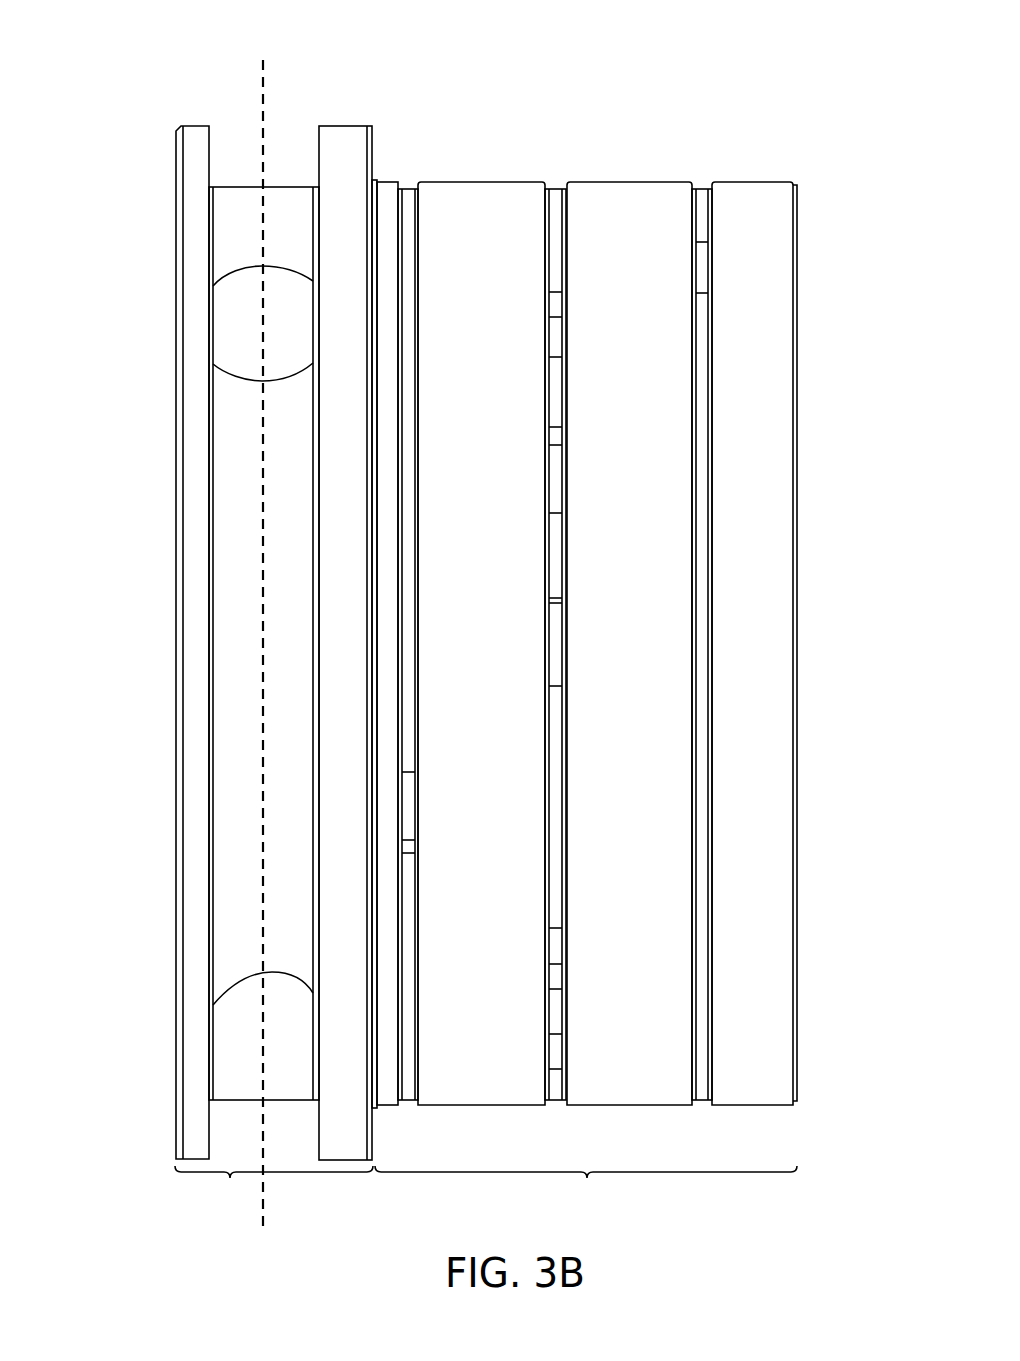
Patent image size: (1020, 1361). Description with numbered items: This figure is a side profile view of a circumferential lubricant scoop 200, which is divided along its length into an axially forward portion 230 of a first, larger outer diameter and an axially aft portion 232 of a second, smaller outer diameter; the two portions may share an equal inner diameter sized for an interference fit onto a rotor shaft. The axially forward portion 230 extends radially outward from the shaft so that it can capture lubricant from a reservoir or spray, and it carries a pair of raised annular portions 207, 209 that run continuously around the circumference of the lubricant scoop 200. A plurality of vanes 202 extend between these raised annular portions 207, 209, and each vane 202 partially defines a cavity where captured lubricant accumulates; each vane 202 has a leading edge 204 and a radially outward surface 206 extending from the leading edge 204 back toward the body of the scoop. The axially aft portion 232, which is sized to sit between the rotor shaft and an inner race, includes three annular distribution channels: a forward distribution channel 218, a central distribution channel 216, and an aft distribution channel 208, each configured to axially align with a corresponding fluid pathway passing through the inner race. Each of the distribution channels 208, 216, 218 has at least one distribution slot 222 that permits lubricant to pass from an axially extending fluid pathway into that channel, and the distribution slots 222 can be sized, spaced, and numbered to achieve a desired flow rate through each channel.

The circumferential lubricant scoop 200 is at (121, 79).
The vane 202 is at (236, 875).
The leading edge 204 is at (236, 256).
The radially outward surface 206 is at (292, 176).
The raised annular portion 207 is at (345, 114).
The aft distribution channel 208 is at (702, 178).
The raised annular portion 209 is at (197, 116).
The central distribution channel 216 is at (555, 178).
The forward distribution channel 218 is at (408, 178).
The distribution slot 222 is at (566, 637).
The axially forward portion 230 is at (274, 1185).
The axially aft portion 232 is at (628, 650).